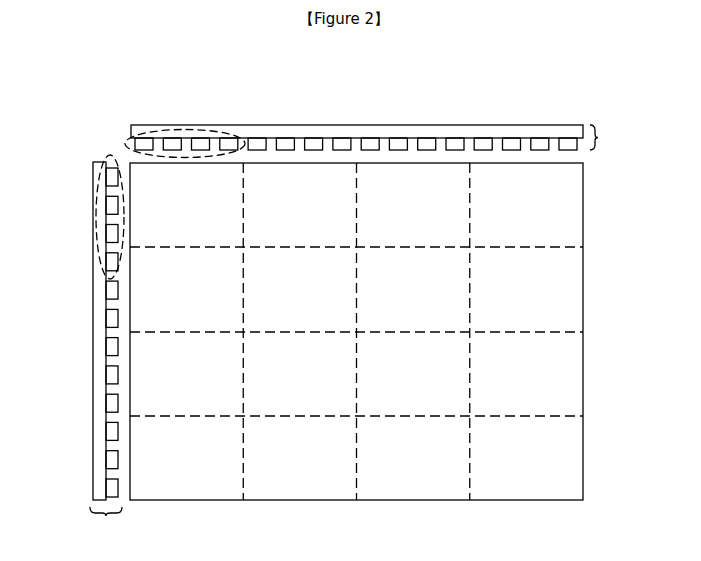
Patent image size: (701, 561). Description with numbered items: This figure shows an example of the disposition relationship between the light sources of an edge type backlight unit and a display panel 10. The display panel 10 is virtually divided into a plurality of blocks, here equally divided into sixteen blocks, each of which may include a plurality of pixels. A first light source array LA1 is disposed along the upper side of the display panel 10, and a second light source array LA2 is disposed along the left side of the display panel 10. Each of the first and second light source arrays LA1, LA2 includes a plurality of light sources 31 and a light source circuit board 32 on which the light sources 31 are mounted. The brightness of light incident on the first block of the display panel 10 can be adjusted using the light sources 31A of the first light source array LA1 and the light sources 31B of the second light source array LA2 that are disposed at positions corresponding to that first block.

The display panel 10 is at (584, 272).
The light sources 31 is at (313, 145).
The light source circuit board 32 is at (393, 133).
The light sources of the first light source array 31A is at (185, 130).
The light sources of the second light source array 31B is at (112, 157).
The first light source array LA1 is at (610, 137).
The second light source array LA2 is at (106, 523).